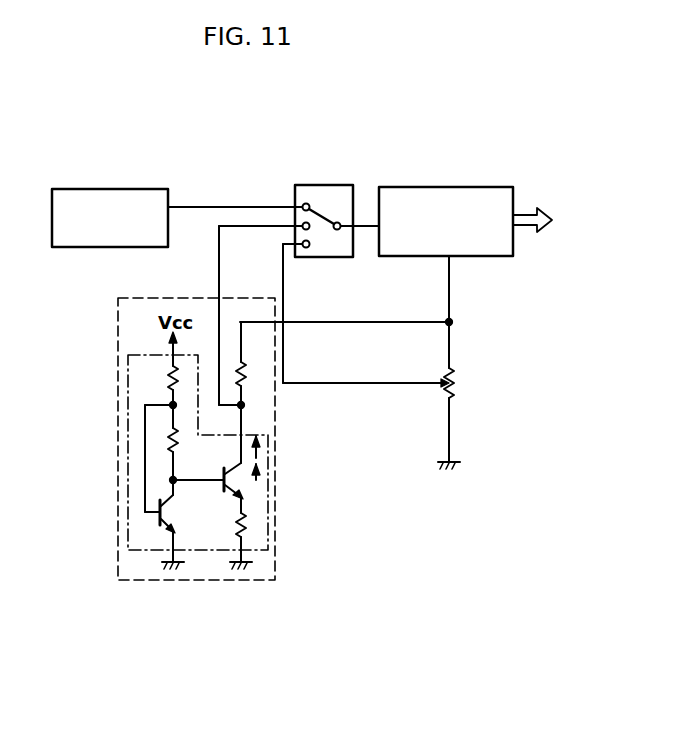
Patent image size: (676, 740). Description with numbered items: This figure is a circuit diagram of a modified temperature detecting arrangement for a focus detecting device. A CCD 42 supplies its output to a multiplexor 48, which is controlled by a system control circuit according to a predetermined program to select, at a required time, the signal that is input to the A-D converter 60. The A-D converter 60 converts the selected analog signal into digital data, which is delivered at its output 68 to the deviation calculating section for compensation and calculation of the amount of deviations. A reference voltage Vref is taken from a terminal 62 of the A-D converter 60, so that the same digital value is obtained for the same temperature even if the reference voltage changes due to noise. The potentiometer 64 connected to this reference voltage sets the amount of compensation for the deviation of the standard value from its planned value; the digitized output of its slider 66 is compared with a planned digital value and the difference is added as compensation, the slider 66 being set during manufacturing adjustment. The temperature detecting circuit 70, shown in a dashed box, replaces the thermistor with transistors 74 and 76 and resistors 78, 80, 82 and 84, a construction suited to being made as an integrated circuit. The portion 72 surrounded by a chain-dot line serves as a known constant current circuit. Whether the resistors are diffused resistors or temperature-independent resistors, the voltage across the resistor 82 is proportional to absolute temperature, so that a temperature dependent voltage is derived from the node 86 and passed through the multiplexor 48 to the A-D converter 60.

The CCD 42 is at (128, 189).
The multiplexor 48 is at (322, 185).
The A-D converter 60 is at (443, 187).
The terminal 62 is at (449, 283).
The potentiometer 64 is at (455, 394).
The slider 66 is at (392, 383).
The deviation calculating section 68 is at (551, 221).
The temperature detecting circuit 70 is at (160, 580).
The constant current circuit 72 is at (140, 552).
The transistor 74 is at (158, 517).
The transistor 76 is at (236, 481).
The resistor 78 is at (170, 370).
The resistor 80 is at (170, 438).
The resistor 82 is at (243, 374).
The resistor 84 is at (247, 524).
The node 86 is at (241, 405).